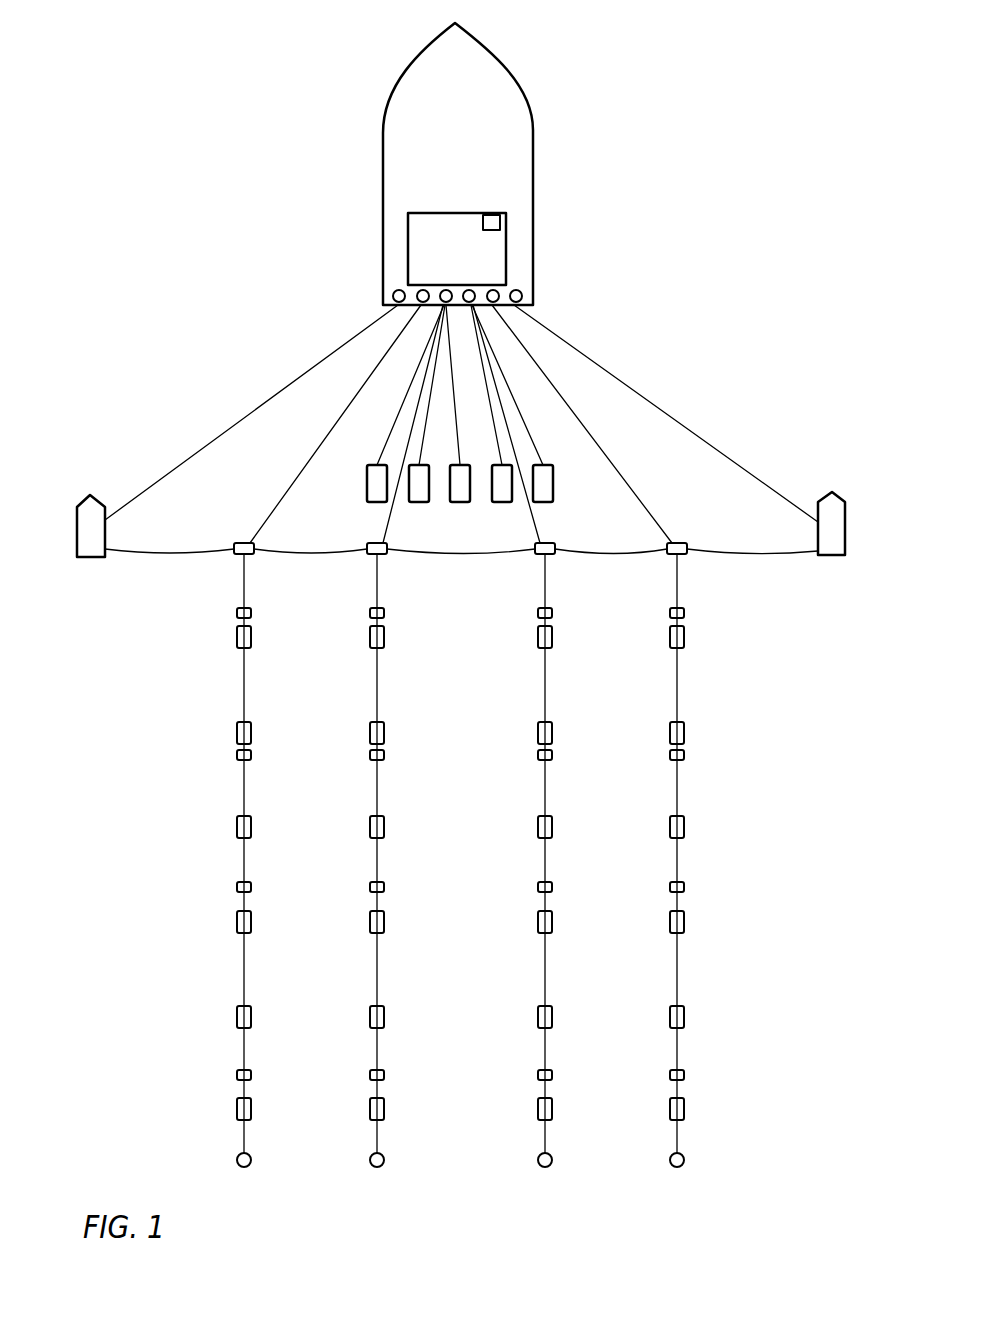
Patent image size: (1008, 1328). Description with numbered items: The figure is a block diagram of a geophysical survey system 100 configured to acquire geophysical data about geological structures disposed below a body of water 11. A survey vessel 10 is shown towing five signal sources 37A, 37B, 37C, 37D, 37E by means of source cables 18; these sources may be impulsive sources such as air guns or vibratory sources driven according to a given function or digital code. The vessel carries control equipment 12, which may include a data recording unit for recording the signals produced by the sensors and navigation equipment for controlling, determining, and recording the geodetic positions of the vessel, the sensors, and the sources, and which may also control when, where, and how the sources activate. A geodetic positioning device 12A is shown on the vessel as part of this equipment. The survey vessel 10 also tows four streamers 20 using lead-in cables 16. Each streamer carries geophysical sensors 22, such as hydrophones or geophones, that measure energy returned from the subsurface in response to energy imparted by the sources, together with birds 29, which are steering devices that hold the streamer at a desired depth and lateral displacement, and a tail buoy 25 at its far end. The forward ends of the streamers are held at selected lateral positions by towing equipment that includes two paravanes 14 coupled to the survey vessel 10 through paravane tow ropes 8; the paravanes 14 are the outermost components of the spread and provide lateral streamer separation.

The geophysical survey system 100 is at (148, 70).
The survey vessel 10 is at (470, 143).
The body of water 11 is at (810, 181).
The control equipment 12 is at (484, 213).
The geodetic positioning device 12A is at (495, 222).
The paravane tow ropes 8 is at (273, 403).
The paravanes 14 is at (77, 541).
The lead-in cables 16 is at (268, 513).
The source cables 18 is at (520, 412).
The signal source 37A is at (377, 502).
The signal source 37B is at (419, 502).
The signal source 37C is at (460, 502).
The signal source 37D is at (502, 502).
The signal source 37E is at (543, 502).
The streamers 20 is at (246, 583).
The geophysical sensors 22 is at (385, 637).
The birds 29 is at (385, 612).
The tail buoys 25 is at (380, 1167).